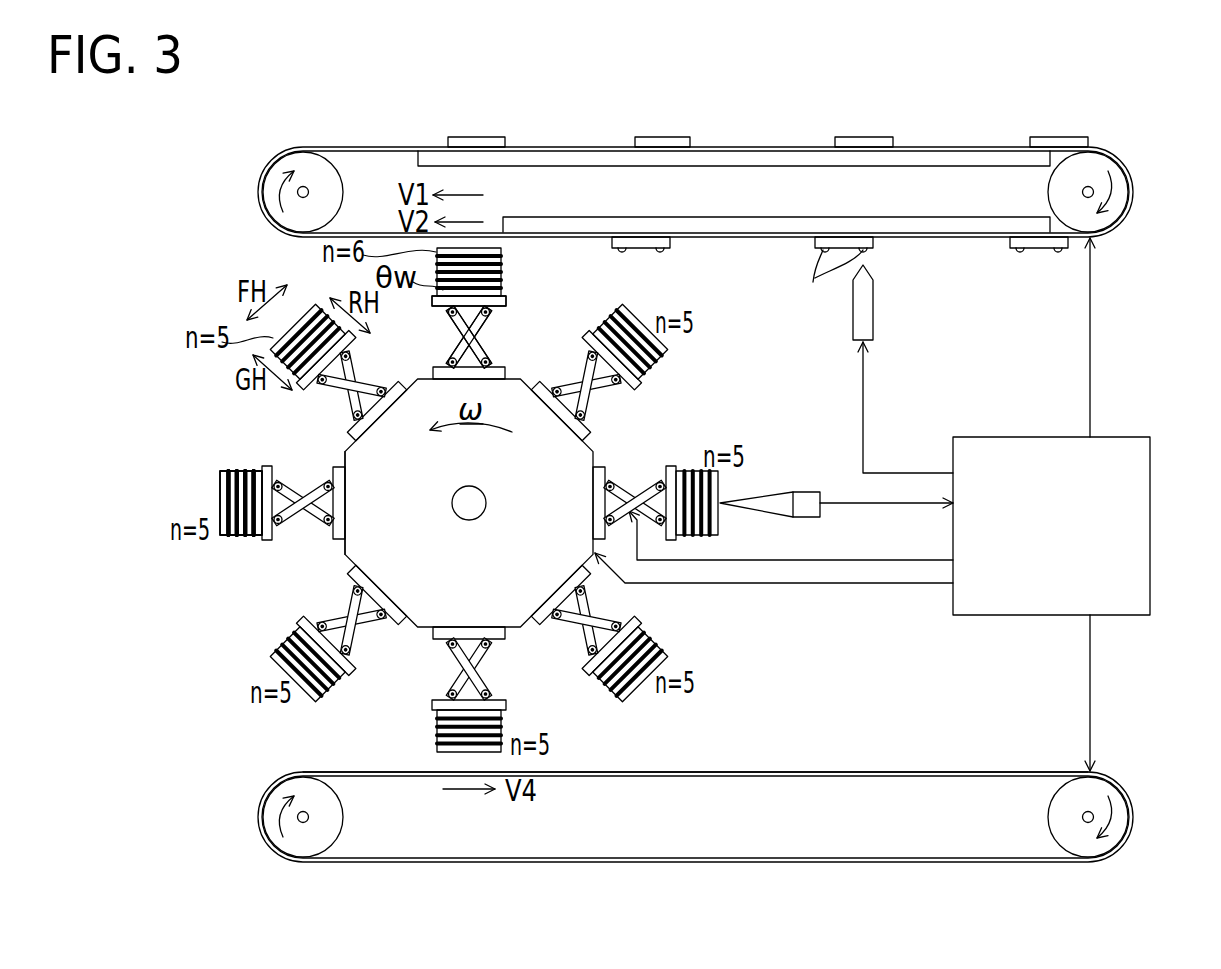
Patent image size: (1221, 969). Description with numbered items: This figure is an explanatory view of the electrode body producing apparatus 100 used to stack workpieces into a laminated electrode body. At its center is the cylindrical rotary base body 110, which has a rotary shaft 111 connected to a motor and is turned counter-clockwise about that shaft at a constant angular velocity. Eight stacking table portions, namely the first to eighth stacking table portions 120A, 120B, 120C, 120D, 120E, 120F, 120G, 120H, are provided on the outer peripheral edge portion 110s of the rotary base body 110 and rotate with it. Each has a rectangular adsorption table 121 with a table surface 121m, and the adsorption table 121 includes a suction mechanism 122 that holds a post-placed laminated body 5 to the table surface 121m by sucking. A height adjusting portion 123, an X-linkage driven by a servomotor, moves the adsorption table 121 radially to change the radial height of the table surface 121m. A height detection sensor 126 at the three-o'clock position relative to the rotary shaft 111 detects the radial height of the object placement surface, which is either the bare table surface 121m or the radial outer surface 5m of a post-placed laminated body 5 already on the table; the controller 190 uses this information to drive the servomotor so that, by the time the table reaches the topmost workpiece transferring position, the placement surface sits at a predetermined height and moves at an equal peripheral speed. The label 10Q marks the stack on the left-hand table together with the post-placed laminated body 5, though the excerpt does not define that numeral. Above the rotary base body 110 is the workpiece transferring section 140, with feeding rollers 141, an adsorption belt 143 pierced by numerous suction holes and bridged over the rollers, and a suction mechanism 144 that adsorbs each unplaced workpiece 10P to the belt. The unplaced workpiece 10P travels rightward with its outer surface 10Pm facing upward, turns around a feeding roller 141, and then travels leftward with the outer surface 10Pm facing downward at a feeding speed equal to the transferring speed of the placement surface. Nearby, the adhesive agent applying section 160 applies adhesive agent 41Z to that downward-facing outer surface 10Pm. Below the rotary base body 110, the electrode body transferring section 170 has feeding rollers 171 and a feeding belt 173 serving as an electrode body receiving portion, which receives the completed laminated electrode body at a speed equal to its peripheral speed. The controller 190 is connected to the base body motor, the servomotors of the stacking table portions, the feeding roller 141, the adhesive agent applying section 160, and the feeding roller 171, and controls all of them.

The electrode body producing apparatus 100 is at (1140, 308).
The rotary base body 110 is at (367, 467).
The outer peripheral edge portion 110s is at (345, 550).
The rotary shaft 111 is at (468, 522).
The first stacking table portion 120A is at (457, 330).
The second stacking table portion 120B is at (603, 388).
The third stacking table portion 120C is at (643, 463).
The fourth stacking table portion 120D is at (604, 616).
The fifth stacking table portion 120E is at (481, 660).
The sixth stacking table portion 120F is at (358, 635).
The seventh stacking table portion 120G is at (296, 512).
The eighth stacking table portion 120H is at (340, 394).
The adsorption table 121 is at (504, 300).
The suction mechanism 122 is at (469, 301).
The table surface 121m is at (477, 290).
The height adjusting portion 123 is at (490, 342).
The height detection sensor 126 is at (818, 492).
The workpiece transferring section 140 is at (967, 147).
The feeding rollers 141 is at (303, 168).
The adsorption belt 143 is at (594, 158).
The suction mechanism 144 is at (783, 225).
The adhesive agent applying section 160 is at (873, 302).
The electrode body transferring section 170 is at (903, 771).
The feeding rollers 171 is at (283, 788).
The feeding belt 173 is at (800, 771).
The controller 190 is at (1078, 539).
The unplaced workpiece 10P is at (485, 138).
The outer surface 10Pm is at (470, 138).
The stacked media 10Q is at (242, 480).
The post-placed laminated body 5 is at (223, 492).
The radial outer surface 5m is at (220, 505).
The adhesive agent 41Z is at (826, 281).